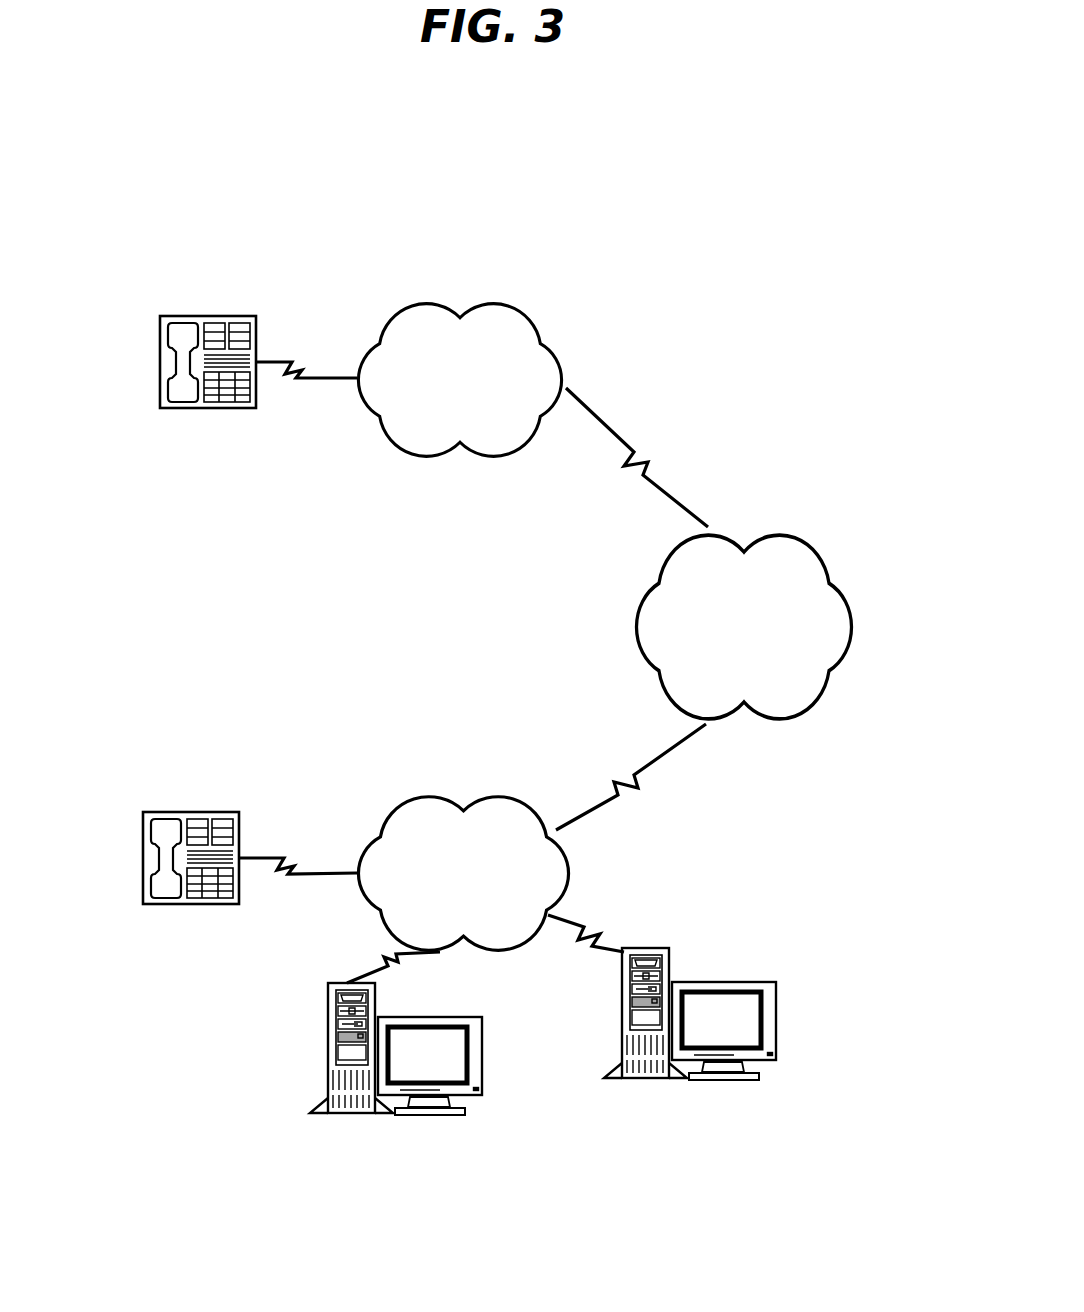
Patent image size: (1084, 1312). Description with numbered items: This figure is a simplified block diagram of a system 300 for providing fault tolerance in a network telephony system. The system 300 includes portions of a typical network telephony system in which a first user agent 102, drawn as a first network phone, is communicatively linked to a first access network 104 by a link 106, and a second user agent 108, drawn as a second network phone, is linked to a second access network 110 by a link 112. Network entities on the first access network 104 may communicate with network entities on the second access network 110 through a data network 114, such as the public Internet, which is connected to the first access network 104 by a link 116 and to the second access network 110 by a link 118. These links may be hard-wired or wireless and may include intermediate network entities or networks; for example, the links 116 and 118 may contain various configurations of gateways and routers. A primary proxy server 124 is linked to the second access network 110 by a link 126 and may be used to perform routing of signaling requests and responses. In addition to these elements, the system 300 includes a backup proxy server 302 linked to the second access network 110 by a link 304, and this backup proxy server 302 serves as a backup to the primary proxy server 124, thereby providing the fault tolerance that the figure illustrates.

The system 300 is at (865, 187).
The first user agent 102 is at (160, 366).
The first access network 104 is at (459, 380).
The link 106 is at (298, 358).
The second user agent 108 is at (143, 860).
The second access network 110 is at (463, 874).
The link 112 is at (298, 856).
The data network 114 is at (743, 627).
The link 116 is at (640, 447).
The link 118 is at (605, 786).
The primary proxy server 124 is at (622, 1018).
The link 126 is at (605, 924).
The backup proxy server 302 is at (328, 1046).
The link 304 is at (400, 970).